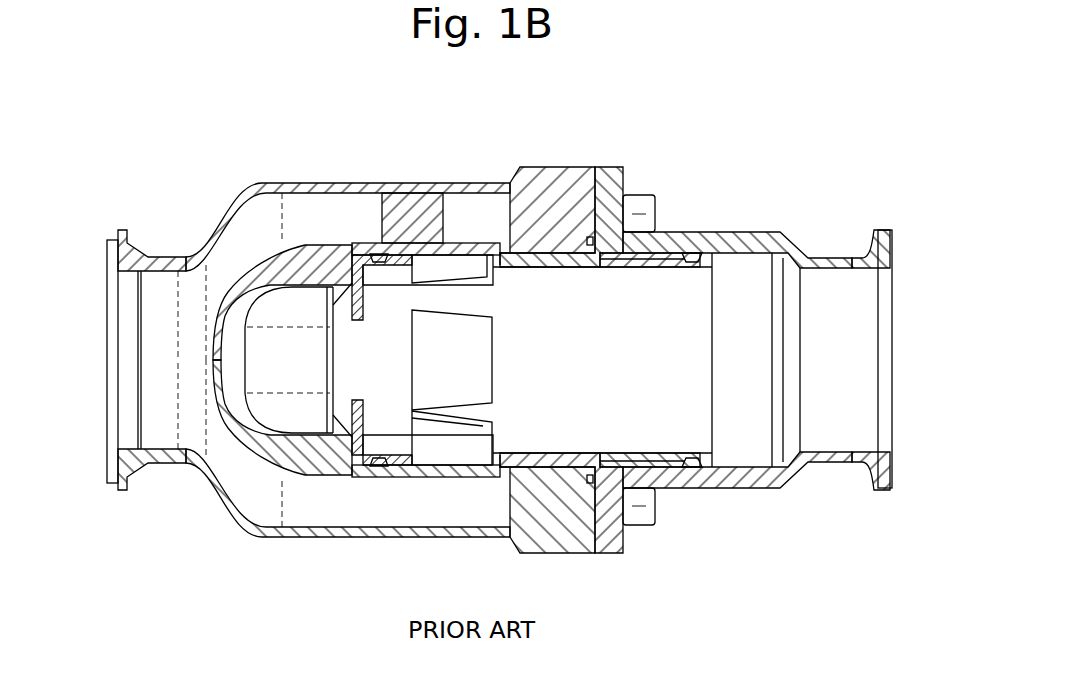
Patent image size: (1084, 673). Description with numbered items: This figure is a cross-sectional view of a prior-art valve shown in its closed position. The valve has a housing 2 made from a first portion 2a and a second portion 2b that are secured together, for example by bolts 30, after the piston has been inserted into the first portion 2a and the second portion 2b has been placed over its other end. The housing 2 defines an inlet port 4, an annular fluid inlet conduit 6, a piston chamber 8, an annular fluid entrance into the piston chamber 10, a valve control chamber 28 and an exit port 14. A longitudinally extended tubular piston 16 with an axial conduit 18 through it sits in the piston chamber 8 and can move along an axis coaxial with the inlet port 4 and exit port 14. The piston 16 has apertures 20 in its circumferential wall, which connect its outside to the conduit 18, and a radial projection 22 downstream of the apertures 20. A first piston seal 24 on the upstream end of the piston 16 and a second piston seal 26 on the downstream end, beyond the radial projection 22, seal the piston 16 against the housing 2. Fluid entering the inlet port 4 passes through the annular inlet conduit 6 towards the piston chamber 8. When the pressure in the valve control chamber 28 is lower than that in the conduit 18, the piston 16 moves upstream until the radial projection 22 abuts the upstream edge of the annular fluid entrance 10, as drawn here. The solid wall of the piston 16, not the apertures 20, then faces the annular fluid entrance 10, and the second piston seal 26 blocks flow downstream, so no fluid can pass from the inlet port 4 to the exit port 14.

The housing 2 is at (294, 137).
The first portion of the housing 2a is at (410, 197).
The second portion of the housing 2b is at (680, 238).
The inlet port 4 is at (91, 343).
The annular fluid inlet conduit 6 is at (253, 224).
The piston chamber 8 is at (745, 278).
The annular fluid entrance into the piston chamber 10 is at (575, 465).
The exit port 14 is at (904, 343).
The tubular piston 16 is at (640, 457).
The axial conduit 18 is at (662, 387).
The apertures 20 is at (437, 448).
The radial projection 22 is at (573, 245).
The first piston seal 24 is at (372, 465).
The second piston seal 26 is at (692, 255).
The valve control chamber 28 is at (257, 340).
The bolts 30 is at (643, 203).